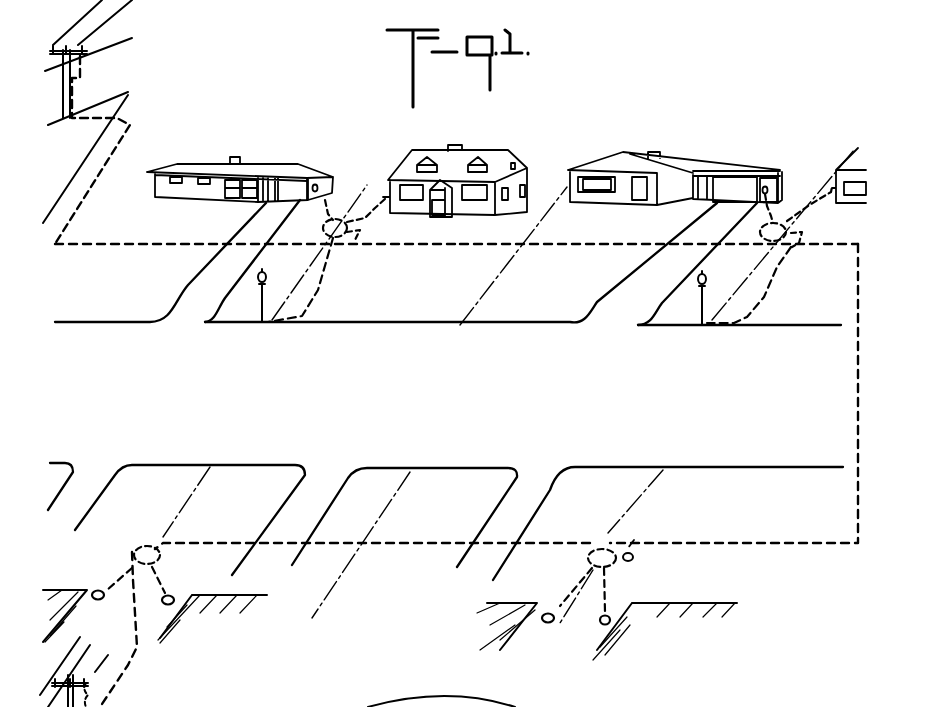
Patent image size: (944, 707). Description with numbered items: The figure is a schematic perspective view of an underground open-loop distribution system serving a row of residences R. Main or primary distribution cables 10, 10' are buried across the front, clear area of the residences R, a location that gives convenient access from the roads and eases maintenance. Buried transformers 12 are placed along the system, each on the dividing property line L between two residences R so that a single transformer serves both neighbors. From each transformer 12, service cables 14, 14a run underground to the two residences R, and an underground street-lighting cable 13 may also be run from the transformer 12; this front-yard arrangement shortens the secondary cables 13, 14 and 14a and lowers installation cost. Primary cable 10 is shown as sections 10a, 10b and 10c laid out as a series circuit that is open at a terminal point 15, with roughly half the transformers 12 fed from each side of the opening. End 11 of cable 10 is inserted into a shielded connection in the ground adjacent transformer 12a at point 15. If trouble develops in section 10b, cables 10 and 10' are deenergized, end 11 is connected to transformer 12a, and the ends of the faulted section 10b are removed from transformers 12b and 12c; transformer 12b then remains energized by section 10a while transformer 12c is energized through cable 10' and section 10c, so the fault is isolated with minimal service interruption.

The primary distribution cable 10 is at (107, 150).
The primary cable section 10a is at (194, 243).
The primary cable section 10b is at (614, 228).
The primary cable section 10c is at (855, 444).
The primary distribution cable 10' is at (345, 607).
The end of cable 11 is at (633, 555).
The buried transformer 12 is at (152, 546).
The buried transformer 12a is at (603, 549).
The buried transformer 12b is at (323, 227).
The buried transformer 12c is at (760, 234).
The underground street-lighting cable 13 is at (320, 290).
The service cable 14 is at (328, 200).
The service cable 14a is at (372, 204).
The terminal point 15 is at (636, 531).
The dividing property line L is at (312, 257).
The residence R is at (258, 170).